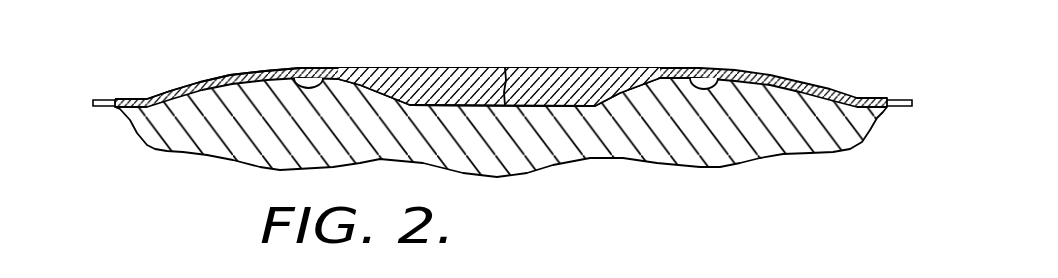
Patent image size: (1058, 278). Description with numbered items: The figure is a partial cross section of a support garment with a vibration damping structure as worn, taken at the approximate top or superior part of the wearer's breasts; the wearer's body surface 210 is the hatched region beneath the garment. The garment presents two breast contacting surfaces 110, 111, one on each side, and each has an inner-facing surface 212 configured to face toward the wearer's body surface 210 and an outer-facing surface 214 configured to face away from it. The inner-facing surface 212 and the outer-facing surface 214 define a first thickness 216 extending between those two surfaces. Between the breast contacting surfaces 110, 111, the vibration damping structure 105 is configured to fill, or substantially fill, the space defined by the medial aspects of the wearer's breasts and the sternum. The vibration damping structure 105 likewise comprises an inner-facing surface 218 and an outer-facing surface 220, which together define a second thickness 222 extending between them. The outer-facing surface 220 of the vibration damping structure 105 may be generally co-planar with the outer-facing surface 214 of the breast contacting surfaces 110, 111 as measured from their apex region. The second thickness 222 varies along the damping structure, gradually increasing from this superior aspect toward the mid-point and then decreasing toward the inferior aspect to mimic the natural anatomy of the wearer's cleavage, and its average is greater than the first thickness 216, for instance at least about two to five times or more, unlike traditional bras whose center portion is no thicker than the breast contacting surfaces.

The vibration damping structure 105 is at (592, 72).
The breast contacting surface 110 is at (815, 84).
The breast contacting surface 111 is at (230, 73).
The wearer's body surface 210 is at (504, 150).
The inner-facing surface 212 is at (321, 85).
The outer-facing surface 214 is at (273, 68).
The first thickness 216 is at (92, 103).
The inner-facing surface 218 is at (555, 107).
The outer-facing surface 220 is at (447, 68).
The second thickness 222 is at (507, 92).